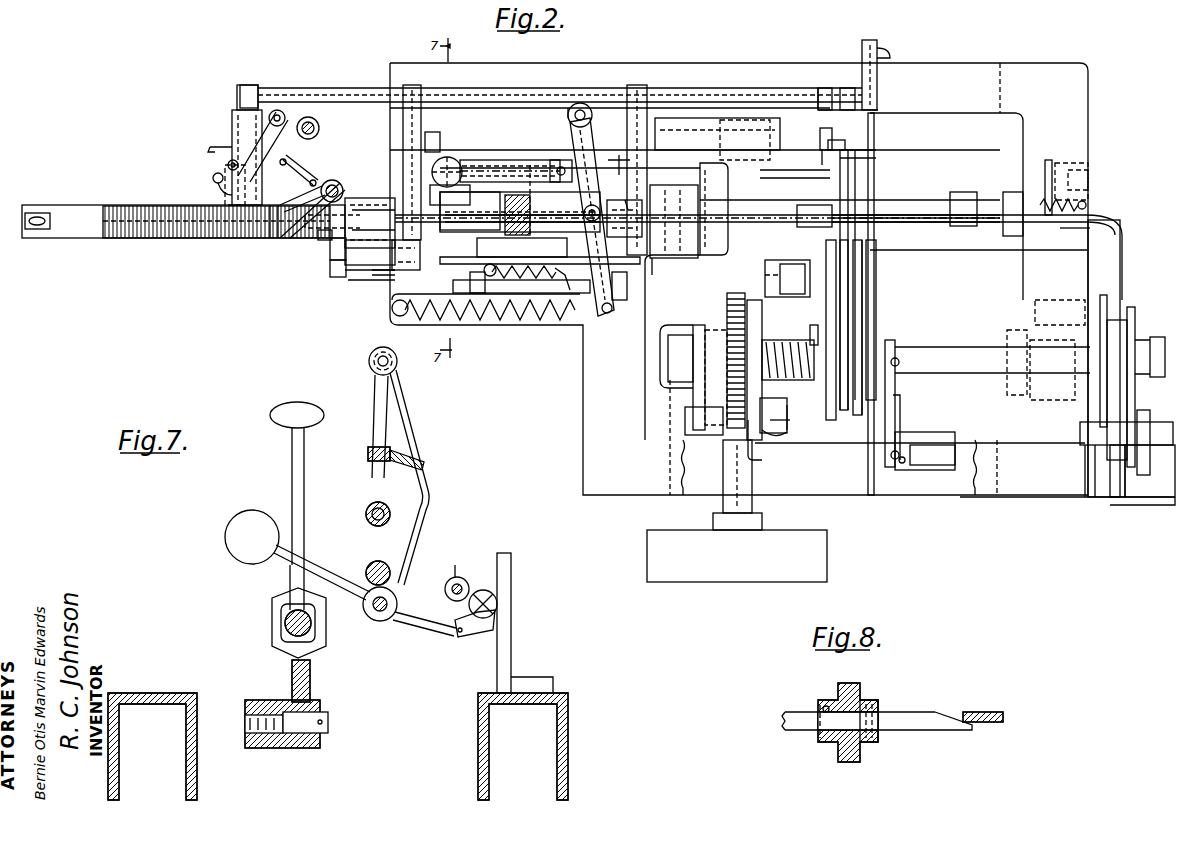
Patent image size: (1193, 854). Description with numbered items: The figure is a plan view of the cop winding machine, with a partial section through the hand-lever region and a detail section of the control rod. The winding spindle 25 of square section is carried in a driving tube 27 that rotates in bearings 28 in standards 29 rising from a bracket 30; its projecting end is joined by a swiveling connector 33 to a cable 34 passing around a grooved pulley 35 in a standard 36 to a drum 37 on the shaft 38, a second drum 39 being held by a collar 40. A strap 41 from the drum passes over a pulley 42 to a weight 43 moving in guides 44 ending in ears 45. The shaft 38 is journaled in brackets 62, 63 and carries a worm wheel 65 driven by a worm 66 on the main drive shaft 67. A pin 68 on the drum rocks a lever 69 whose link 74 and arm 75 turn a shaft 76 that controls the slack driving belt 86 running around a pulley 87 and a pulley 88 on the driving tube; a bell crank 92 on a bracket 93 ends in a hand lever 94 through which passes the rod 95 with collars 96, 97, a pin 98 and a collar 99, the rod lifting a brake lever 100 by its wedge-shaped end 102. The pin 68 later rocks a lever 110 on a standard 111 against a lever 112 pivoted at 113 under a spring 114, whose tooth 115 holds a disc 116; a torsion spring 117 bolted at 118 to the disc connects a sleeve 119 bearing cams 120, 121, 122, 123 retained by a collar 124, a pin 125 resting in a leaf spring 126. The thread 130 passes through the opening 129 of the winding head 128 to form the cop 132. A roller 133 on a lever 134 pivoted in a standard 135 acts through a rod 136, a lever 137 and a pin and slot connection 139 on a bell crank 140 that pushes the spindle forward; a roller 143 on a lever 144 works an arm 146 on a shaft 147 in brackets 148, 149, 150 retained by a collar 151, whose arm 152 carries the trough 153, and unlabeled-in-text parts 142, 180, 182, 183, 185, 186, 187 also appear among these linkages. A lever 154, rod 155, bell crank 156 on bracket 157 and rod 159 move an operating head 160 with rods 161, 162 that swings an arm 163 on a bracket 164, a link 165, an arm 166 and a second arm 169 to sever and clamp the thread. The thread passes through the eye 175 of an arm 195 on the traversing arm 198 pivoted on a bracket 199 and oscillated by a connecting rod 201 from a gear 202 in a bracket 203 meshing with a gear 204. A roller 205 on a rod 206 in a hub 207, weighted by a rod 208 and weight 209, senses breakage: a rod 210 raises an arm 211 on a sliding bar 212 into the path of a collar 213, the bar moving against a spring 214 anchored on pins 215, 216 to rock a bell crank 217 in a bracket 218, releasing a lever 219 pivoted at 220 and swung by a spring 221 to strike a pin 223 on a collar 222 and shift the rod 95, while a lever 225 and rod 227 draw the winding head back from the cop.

In FIG. 2, the winding spindle 25 is at (760, 222).
In FIG. 7, the winding spindle 25 is at (366, 512).
In FIG. 7, the driving tube 27 is at (386, 506).
In FIG. 2, the bearings 28 is at (385, 243).
In FIG. 2, the standards 29 is at (418, 240).
In FIG. 8, the bracket 30 is at (840, 750).
In FIG. 2, the swiveling connector 33 is at (800, 206).
In FIG. 2, the cable 34 is at (891, 218).
In FIG. 2, the grooved pulley 35 is at (1110, 228).
In FIG. 2, the standard 36 is at (1088, 170).
In FIG. 2, the drum 37 is at (1104, 295).
In FIG. 2, the shaft 38 is at (985, 347).
In FIG. 2, the second drum 39 is at (1135, 310).
In FIG. 2, the collar 40 is at (1158, 337).
In FIG. 2, the strap 41 is at (1150, 410).
In FIG. 2, the pulley 42 is at (1132, 470).
In FIG. 2, the weight 43 is at (1150, 490).
In FIG. 2, the guides 44 is at (1100, 485).
In FIG. 2, the ears 45 is at (1108, 490).
In FIG. 2, the bracket 62 is at (1060, 386).
In FIG. 2, the bracket 63 is at (690, 380).
In FIG. 2, the worm wheel 65 is at (736, 293).
In FIG. 2, the worm 66 is at (715, 325).
In FIG. 2, the main drive shaft 67 is at (752, 483).
In FIG. 2, the pin 68 is at (1088, 310).
In FIG. 2, the lever 69 is at (1104, 358).
In FIG. 2, the link 74 is at (1070, 163).
In FIG. 2, the arm 75 is at (1090, 190).
In FIG. 2, the shaft 76 is at (936, 246).
In FIG. 2, the driving belt 86 is at (656, 262).
In FIG. 2, the pulley 87 is at (812, 168).
In FIG. 2, the pulley 88 is at (688, 258).
In FIG. 7, the bell crank 92 is at (300, 748).
In FIG. 7, the bracket 93 is at (262, 750).
In FIG. 2, the hand lever 94 is at (450, 160).
In FIG. 7, the hand lever 94 is at (304, 484).
In FIG. 2, the rod 95 is at (516, 160).
In FIG. 7, the rod 95 is at (304, 634).
In FIG. 8, the rod 95 is at (790, 728).
In FIG. 2, the collar 96 is at (440, 185).
In FIG. 7, the collar 96 is at (282, 612).
In FIG. 2, the collar 97 is at (480, 165).
In FIG. 2, the pin 98 is at (615, 158).
In FIG. 8, the pin 98 is at (822, 708).
In FIG. 8, the collar 99 is at (872, 700).
In FIG. 2, the lever 100 is at (725, 160).
In FIG. 8, the lever 100 is at (1000, 712).
In FIG. 2, the wedge-shaped end 102 is at (694, 160).
In FIG. 8, the wedge-shaped end 102 is at (948, 712).
In FIG. 2, the lever 110 is at (1036, 452).
In FIG. 2, the standard 111 is at (925, 465).
In FIG. 2, the lever 112 is at (756, 455).
In FIG. 2, the pivot 113 is at (778, 430).
In FIG. 2, the spring 114 is at (728, 412).
In FIG. 2, the tooth 115 is at (760, 340).
In FIG. 2, the disc 116 is at (758, 322).
In FIG. 2, the torsion spring 117 is at (805, 370).
In FIG. 2, the bolt 118 is at (770, 398).
In FIG. 2, the sleeve 119 is at (812, 326).
In FIG. 2, the cam 120 is at (830, 420).
In FIG. 2, the cam 121 is at (843, 412).
In FIG. 2, the cam 122 is at (858, 415).
In FIG. 2, the cam 123 is at (872, 402).
In FIG. 2, the collar 124 is at (895, 340).
In FIG. 2, the pin 125 is at (899, 362).
In FIG. 2, the leaf spring 126 is at (897, 420).
In FIG. 2, the winding head 128 is at (360, 198).
In FIG. 2, the lengthwise opening 129 is at (326, 242).
In FIG. 7, the thread 130 is at (372, 381).
In FIG. 2, the cop 132 is at (172, 240).
In FIG. 2, the roller 133 is at (868, 325).
In FIG. 2, the lever 134 is at (878, 288).
In FIG. 2, the standard 135 is at (795, 270).
In FIG. 2, the rod 136 is at (850, 190).
In FIG. 2, the lever 137 is at (918, 200).
In FIG. 2, the pin and slot connection 139 is at (976, 186).
In FIG. 2, the bell crank 140 is at (1000, 200).
In FIG. 2, the plate 142 is at (1047, 165).
In FIG. 2, the roller 143 is at (900, 400).
In FIG. 2, the lever 144 is at (874, 140).
In FIG. 2, the arm 146 is at (870, 42).
In FIG. 2, the shaft 147 is at (322, 88).
In FIG. 2, the bracket 148 is at (405, 85).
In FIG. 2, the bracket 149 is at (635, 85).
In FIG. 2, the bracket 150 is at (842, 88).
In FIG. 2, the collar 151 is at (820, 88).
In FIG. 2, the arm 152 is at (232, 124).
In FIG. 2, the trough 153 is at (77, 203).
In FIG. 2, the lever 154 is at (822, 380).
In FIG. 2, the rod 155 is at (834, 142).
In FIG. 2, the bell crank 156 is at (814, 145).
In FIG. 2, the bracket 157 is at (724, 120).
In FIG. 2, the rod 159 is at (497, 160).
In FIG. 2, the operating head 160 is at (285, 110).
In FIG. 2, the rod 161 is at (210, 144).
In FIG. 2, the rod 162 is at (300, 162).
In FIG. 2, the arm 163 is at (320, 140).
In FIG. 2, the bracket 164 is at (345, 102).
In FIG. 2, the link 165 is at (336, 182).
In FIG. 2, the arm 166 is at (272, 238).
In FIG. 2, the second arm 169 is at (285, 238).
In FIG. 7, the eye 175 is at (368, 450).
In FIG. 2, the pin 180 is at (213, 178).
In FIG. 2, the spring 182 is at (220, 193).
In FIG. 2, the bracket 183 is at (242, 182).
In FIG. 2, the pin 185 is at (228, 162).
In FIG. 2, the lever 186 is at (258, 128).
In FIG. 2, the plate 187 is at (870, 305).
In FIG. 2, the arm 195 is at (332, 256).
In FIG. 7, the arm 195 is at (420, 460).
In FIG. 2, the traversing arm 198 is at (334, 272).
In FIG. 2, the bracket 199 is at (356, 272).
In FIG. 2, the connecting rod 201 is at (364, 280).
In FIG. 7, the connecting rod 201 is at (448, 585).
In FIG. 2, the gear 202 is at (494, 225).
In FIG. 2, the bracket 203 is at (534, 160).
In FIG. 2, the gear 204 is at (512, 235).
In FIG. 2, the roller 205 is at (308, 230).
In FIG. 7, the roller 205 is at (368, 355).
In FIG. 7, the rod 206 is at (430, 494).
In FIG. 7, the hub 207 is at (368, 612).
In FIG. 2, the rod 208 is at (404, 185).
In FIG. 7, the rod 208 is at (335, 562).
In FIG. 2, the weight 209 is at (436, 132).
In FIG. 7, the weight 209 is at (258, 512).
In FIG. 2, the rod 210 is at (392, 266).
In FIG. 7, the rod 210 is at (428, 628).
In FIG. 2, the arm 211 is at (404, 314).
In FIG. 7, the arm 211 is at (472, 630).
In FIG. 2, the sliding bar 212 is at (498, 293).
In FIG. 7, the sliding bar 212 is at (486, 590).
In FIG. 2, the collar 213 is at (426, 272).
In FIG. 7, the collar 213 is at (456, 576).
In FIG. 2, the spring 214 is at (545, 292).
In FIG. 2, the pin 215 is at (570, 295).
In FIG. 2, the pin 216 is at (477, 293).
In FIG. 2, the bell crank 217 is at (605, 314).
In FIG. 2, the bracket 218 is at (622, 300).
In FIG. 2, the lever 219 is at (592, 138).
In FIG. 2, the pivot 220 is at (582, 103).
In FIG. 2, the spring 221 is at (515, 310).
In FIG. 2, the collar 222 is at (568, 120).
In FIG. 2, the pin 223 is at (560, 160).
In FIG. 2, the lever 225 is at (455, 230).
In FIG. 2, the rod 227 is at (582, 208).